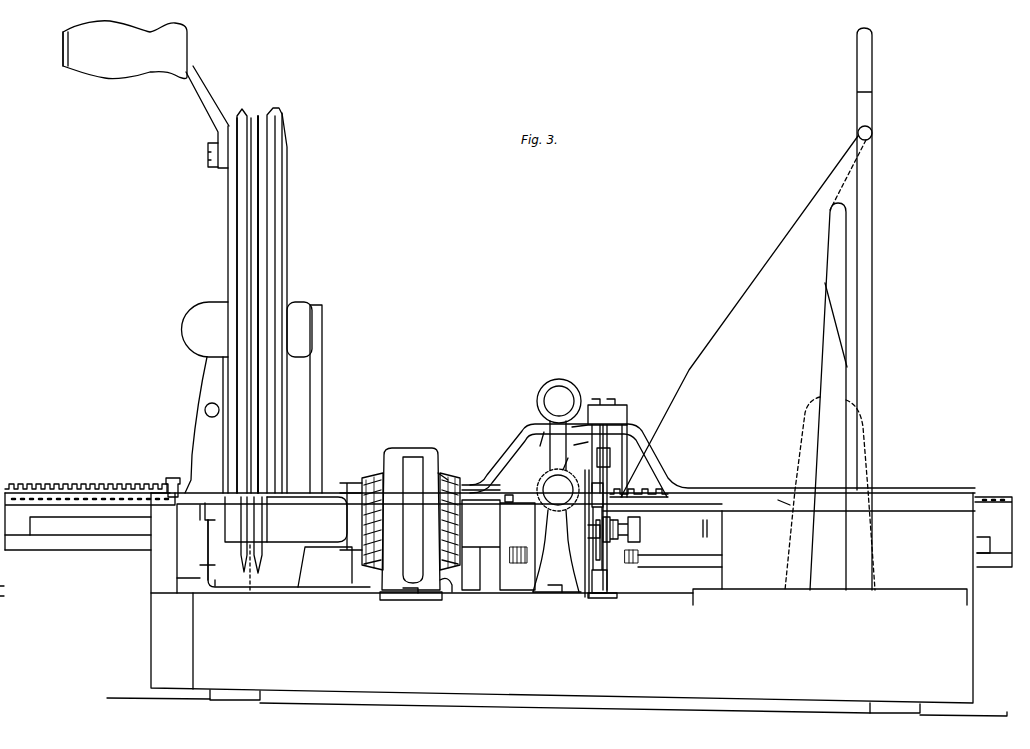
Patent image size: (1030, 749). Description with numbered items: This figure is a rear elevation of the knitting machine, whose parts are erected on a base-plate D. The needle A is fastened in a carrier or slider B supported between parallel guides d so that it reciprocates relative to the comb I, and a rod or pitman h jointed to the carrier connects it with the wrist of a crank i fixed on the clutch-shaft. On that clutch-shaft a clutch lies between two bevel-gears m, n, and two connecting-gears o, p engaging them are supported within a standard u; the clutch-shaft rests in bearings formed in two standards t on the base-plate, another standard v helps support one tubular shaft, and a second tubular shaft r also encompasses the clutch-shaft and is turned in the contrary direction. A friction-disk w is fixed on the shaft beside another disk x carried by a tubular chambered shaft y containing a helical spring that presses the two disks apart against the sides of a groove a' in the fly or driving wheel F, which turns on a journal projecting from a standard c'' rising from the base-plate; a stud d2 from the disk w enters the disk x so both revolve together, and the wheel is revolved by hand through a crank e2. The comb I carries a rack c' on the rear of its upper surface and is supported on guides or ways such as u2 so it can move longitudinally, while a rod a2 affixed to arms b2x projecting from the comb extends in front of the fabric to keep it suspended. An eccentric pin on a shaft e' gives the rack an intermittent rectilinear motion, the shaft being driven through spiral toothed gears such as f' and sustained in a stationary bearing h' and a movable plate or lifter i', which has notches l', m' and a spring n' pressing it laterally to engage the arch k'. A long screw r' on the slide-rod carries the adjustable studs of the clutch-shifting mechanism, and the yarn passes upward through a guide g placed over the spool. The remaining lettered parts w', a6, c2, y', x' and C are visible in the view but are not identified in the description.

The base-plate D is at (557, 604).
The rack c' is at (336, 482).
The perforated strip w' is at (90, 521).
The comb I is at (90, 518).
The arm b2x is at (508, 534).
The rod a2 is at (508, 532).
The needle A is at (4, 590).
The movable plate i' is at (374, 397).
The standard c'' is at (316, 399).
The fly or driving wheel F is at (257, 300).
The groove a' is at (256, 304).
The crank e2 is at (146, 94).
The friction-disk w is at (246, 519).
The tubular and chambered shaft y is at (307, 519).
The disk x is at (258, 535).
The stud d2 is at (257, 567).
The standard t is at (390, 556).
The standard v is at (351, 516).
The bevel-gear m is at (366, 521).
The bevel-gear n is at (455, 521).
The standard u is at (411, 524).
The connecting-gear o is at (445, 471).
The connecting-gear p is at (446, 581).
The tubular shaft r is at (498, 537).
The tie rod a6 is at (743, 316).
The shaft e' is at (558, 490).
The spiral toothed gear f' is at (564, 462).
The stationary bearing h' is at (556, 551).
The spring n' is at (538, 444).
The arch k' is at (599, 419).
The notch m' is at (581, 447).
The catch c2 is at (604, 456).
The carrier or slider B is at (601, 538).
The crank i is at (587, 533).
The rod or pitman h is at (599, 541).
The guide d is at (601, 598).
The notch l' is at (586, 521).
The screw r' is at (621, 540).
The shaft y' is at (680, 559).
The pin x' is at (711, 528).
The lever C is at (830, 396).
The guide g is at (864, 309).
The guide or way u2 is at (781, 498).